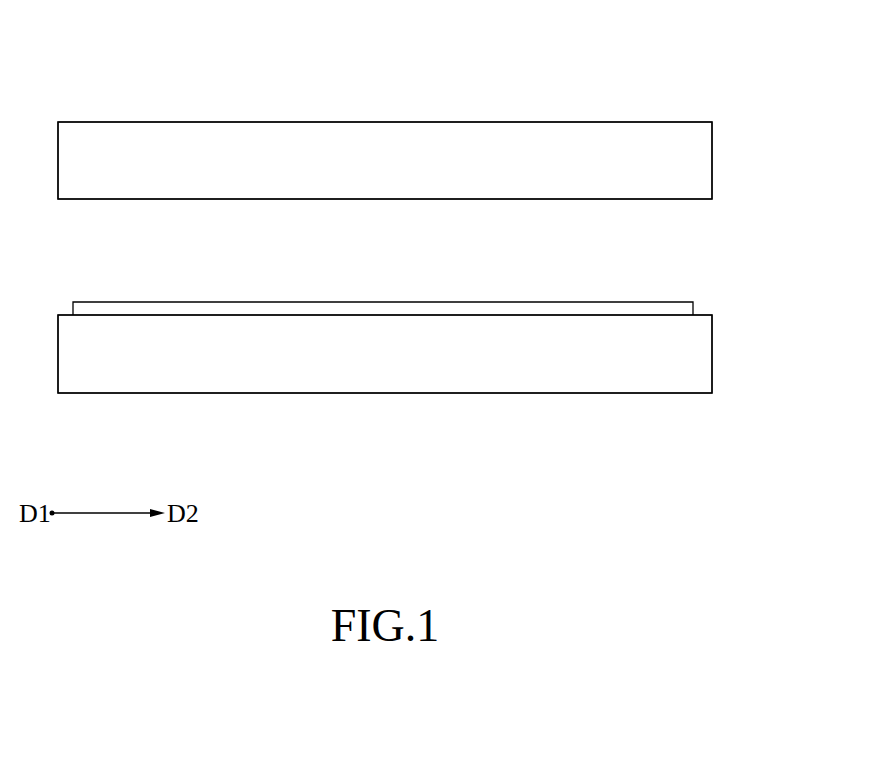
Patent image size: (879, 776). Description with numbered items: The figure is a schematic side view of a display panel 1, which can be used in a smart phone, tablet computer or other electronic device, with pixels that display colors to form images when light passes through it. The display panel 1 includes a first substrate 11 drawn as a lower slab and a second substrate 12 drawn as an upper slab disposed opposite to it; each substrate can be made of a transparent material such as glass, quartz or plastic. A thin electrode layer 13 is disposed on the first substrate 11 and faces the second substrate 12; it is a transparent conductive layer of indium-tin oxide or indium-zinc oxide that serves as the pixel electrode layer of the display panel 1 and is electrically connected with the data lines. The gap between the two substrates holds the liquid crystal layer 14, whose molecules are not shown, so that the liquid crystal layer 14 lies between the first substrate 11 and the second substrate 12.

The display panel 1 is at (137, 58).
The first substrate 11 is at (712, 349).
The second substrate 12 is at (712, 163).
The electrode layer 13 is at (119, 302).
The liquid crystal layer 14 is at (698, 266).